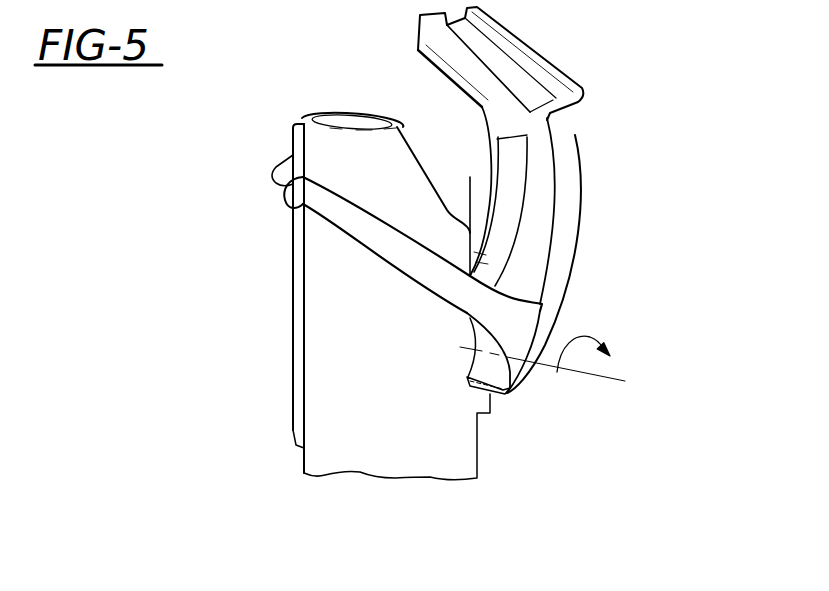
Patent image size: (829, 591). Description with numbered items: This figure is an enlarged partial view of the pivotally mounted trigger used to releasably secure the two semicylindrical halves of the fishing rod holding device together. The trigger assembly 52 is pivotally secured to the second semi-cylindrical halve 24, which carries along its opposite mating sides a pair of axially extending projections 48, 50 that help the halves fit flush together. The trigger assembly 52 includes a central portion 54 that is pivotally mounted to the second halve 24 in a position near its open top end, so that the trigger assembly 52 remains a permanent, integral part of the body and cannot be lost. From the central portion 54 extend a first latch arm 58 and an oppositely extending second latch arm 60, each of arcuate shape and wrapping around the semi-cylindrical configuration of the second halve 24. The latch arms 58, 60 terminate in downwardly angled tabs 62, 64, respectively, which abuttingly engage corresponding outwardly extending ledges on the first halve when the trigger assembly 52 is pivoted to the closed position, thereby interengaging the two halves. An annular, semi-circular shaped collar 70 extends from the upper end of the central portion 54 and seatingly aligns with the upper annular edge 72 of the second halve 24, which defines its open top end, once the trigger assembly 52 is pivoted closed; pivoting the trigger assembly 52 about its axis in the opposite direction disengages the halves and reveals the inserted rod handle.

The second semi-cylindrical halve 24 is at (300, 487).
The elongate extending projection 48 is at (293, 430).
The elongate extending projection 50 is at (293, 352).
The trigger assembly 52 is at (614, 204).
The central portion 54 is at (565, 273).
The first latch arm 58 is at (433, 283).
The second latch arm 60 is at (470, 178).
The downwardly angled tab 62 is at (285, 198).
The downwardly angled tab 64 is at (277, 170).
The annular and semi-circular shaped collar 70 is at (547, 90).
The upper annular edge 72 is at (330, 125).